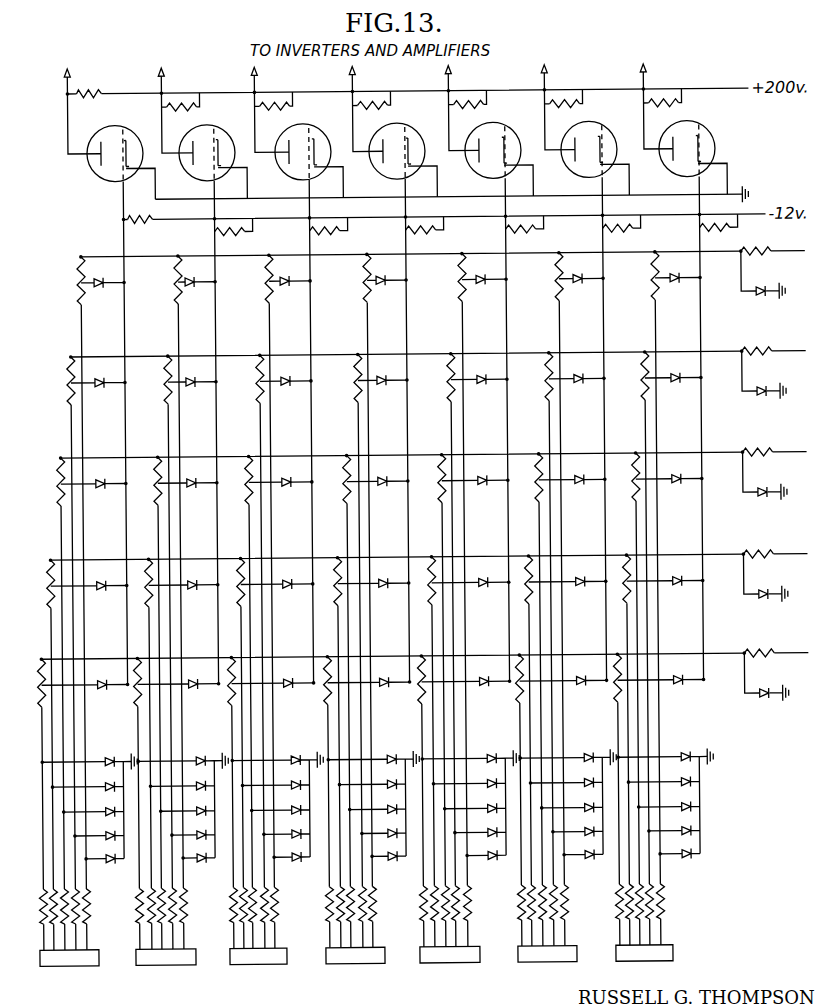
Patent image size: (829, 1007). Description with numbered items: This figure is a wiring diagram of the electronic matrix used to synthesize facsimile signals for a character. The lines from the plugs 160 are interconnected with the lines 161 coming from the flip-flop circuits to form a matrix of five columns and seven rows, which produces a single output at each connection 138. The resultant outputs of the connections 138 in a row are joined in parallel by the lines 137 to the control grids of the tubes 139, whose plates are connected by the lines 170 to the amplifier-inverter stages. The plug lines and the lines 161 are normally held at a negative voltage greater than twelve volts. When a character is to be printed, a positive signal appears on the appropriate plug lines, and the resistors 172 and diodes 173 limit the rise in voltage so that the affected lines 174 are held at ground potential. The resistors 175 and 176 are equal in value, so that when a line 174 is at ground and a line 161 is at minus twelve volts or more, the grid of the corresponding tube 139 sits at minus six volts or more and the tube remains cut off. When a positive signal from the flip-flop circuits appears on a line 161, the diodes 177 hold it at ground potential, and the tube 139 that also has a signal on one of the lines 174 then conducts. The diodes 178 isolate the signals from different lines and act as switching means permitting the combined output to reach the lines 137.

The lines 137 is at (126, 323).
The connection 138 is at (122, 487).
The tube 139 is at (138, 131).
The plug 160 is at (148, 960).
The line 161 is at (781, 256).
The line 170 is at (68, 87).
The resistor 172 is at (96, 900).
The diode 173 is at (106, 784).
The line 174 is at (169, 445).
The resistor 175 is at (80, 292).
The resistor 176 is at (80, 270).
The diode 177 is at (766, 298).
The diode 178 is at (193, 488).